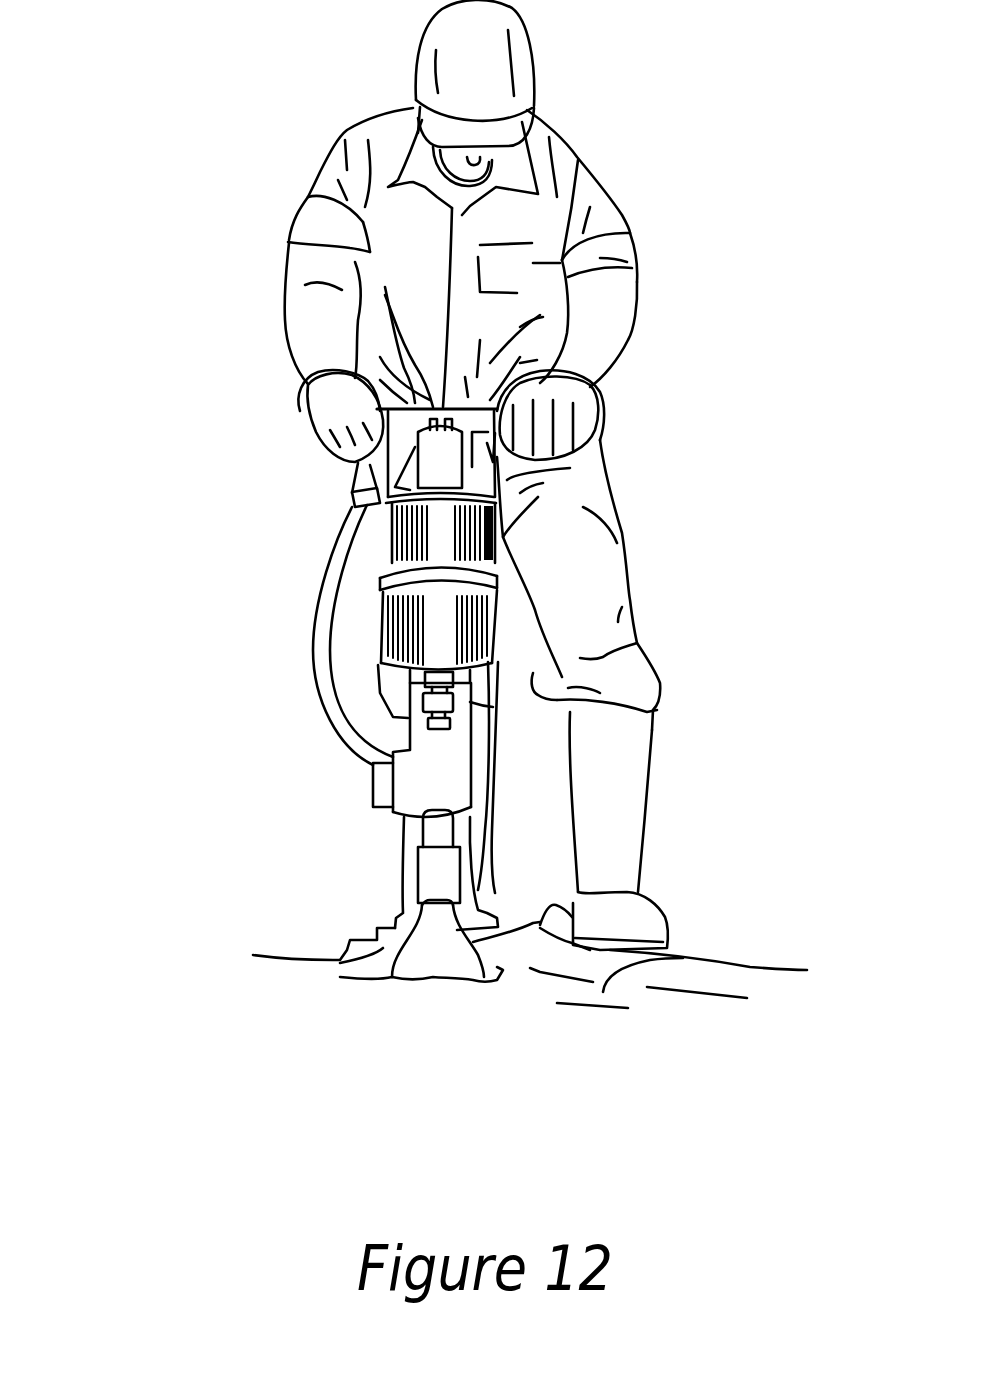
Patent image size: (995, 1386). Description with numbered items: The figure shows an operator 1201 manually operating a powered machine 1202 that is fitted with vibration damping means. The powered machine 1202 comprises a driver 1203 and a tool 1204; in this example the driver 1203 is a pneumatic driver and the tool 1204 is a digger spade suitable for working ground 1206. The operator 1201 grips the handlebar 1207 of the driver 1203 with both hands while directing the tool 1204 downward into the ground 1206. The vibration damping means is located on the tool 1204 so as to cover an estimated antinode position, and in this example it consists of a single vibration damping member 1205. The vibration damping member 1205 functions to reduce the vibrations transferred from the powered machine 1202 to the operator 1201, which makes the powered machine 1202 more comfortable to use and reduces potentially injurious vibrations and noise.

The operator 1201 is at (540, 218).
The powered machine 1202 is at (338, 891).
The driver 1203 is at (519, 601).
The tool 1204 is at (436, 928).
The vibration damping member 1205 is at (438, 873).
The ground 1206 is at (680, 958).
The handlebar 1207 is at (470, 420).